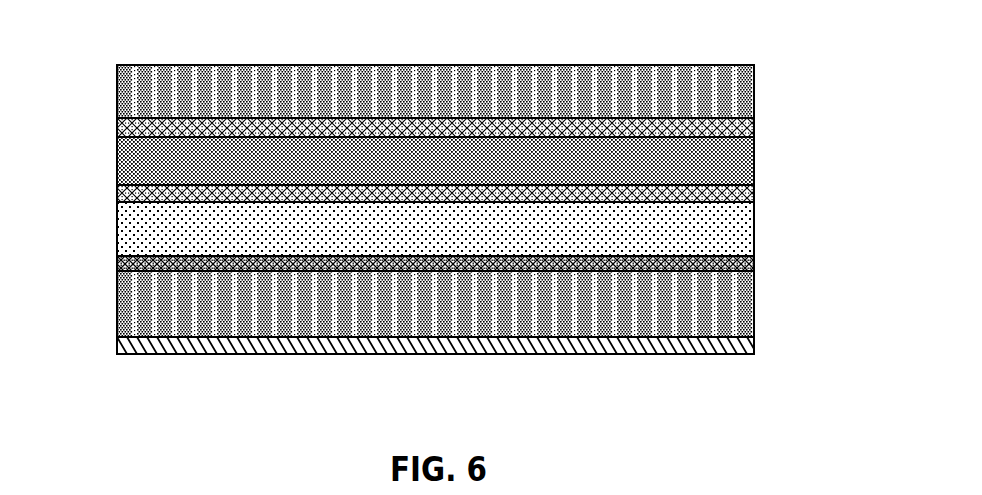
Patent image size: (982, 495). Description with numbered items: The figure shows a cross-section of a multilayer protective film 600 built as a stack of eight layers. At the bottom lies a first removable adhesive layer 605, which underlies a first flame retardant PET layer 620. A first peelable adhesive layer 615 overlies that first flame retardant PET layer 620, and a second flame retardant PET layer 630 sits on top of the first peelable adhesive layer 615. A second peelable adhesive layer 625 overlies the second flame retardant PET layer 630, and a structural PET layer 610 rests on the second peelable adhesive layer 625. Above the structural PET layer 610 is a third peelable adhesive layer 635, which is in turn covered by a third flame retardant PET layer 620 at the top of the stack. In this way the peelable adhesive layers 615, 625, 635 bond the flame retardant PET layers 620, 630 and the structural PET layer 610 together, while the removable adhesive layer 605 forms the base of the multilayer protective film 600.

The multilayer protective film 600 is at (146, 31).
The first removable adhesive layer 605 is at (767, 344).
The structural PET layer 610 is at (107, 161).
The first peelable adhesive layer 615 is at (767, 261).
The flame retardant PET layer 620 is at (107, 88).
The second peelable adhesive layer 625 is at (767, 195).
The second flame retardant PET layer 630 is at (107, 221).
The third peelable adhesive layer 635 is at (767, 126).